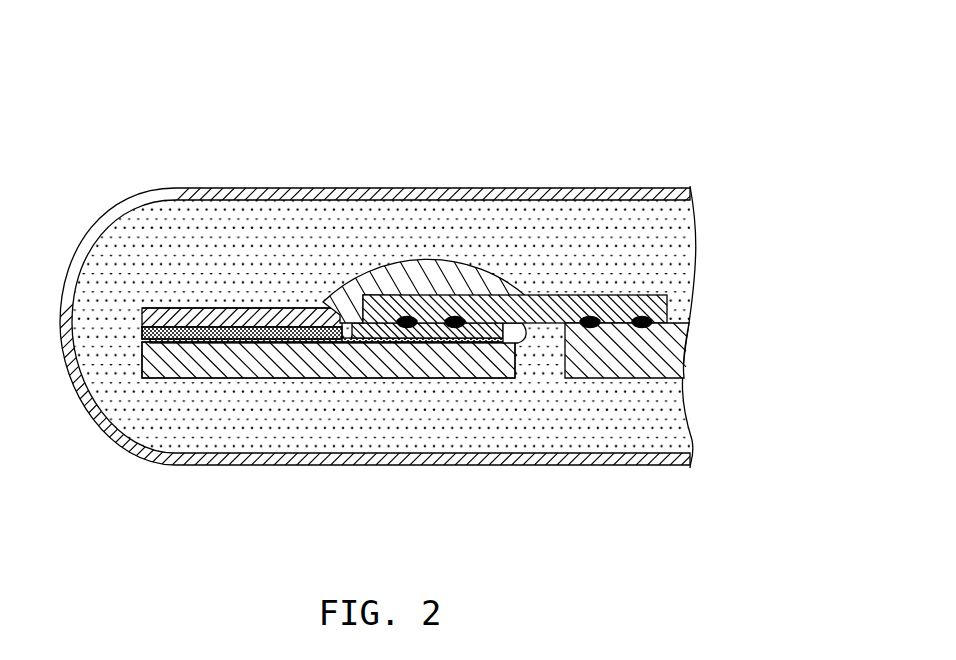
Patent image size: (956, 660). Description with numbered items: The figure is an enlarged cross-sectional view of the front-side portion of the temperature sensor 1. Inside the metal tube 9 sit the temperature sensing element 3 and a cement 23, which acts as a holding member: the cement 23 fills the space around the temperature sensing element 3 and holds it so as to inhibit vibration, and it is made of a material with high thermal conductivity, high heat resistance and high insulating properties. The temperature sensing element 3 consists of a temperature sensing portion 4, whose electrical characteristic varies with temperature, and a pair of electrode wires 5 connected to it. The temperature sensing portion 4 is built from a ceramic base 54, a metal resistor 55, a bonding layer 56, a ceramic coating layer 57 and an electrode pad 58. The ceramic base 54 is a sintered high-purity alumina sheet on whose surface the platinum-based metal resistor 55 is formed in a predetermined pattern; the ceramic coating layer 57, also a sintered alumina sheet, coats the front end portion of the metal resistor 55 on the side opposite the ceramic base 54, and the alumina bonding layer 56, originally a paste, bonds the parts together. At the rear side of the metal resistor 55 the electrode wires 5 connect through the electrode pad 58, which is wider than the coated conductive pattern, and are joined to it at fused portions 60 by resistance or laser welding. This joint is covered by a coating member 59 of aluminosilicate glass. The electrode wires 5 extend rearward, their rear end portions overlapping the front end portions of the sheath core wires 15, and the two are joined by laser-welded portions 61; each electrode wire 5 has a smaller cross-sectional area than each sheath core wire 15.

The temperature sensor 1 is at (507, 74).
The temperature sensing element 3 is at (232, 305).
The temperature sensing portion 4 is at (438, 380).
The electrode wires 5 is at (537, 300).
The metal tube 9 is at (285, 192).
The sheath core wires 15 is at (628, 365).
The cement 23 is at (540, 430).
The ceramic base 54 is at (222, 366).
The metal resistor 55 is at (351, 337).
The bonding layer 56 is at (142, 334).
The ceramic coating layer 57 is at (178, 313).
The electrode pad 58 is at (388, 341).
The coating member 59 is at (485, 283).
The fused portions 60 is at (405, 318).
The welded portions 61 is at (590, 318).